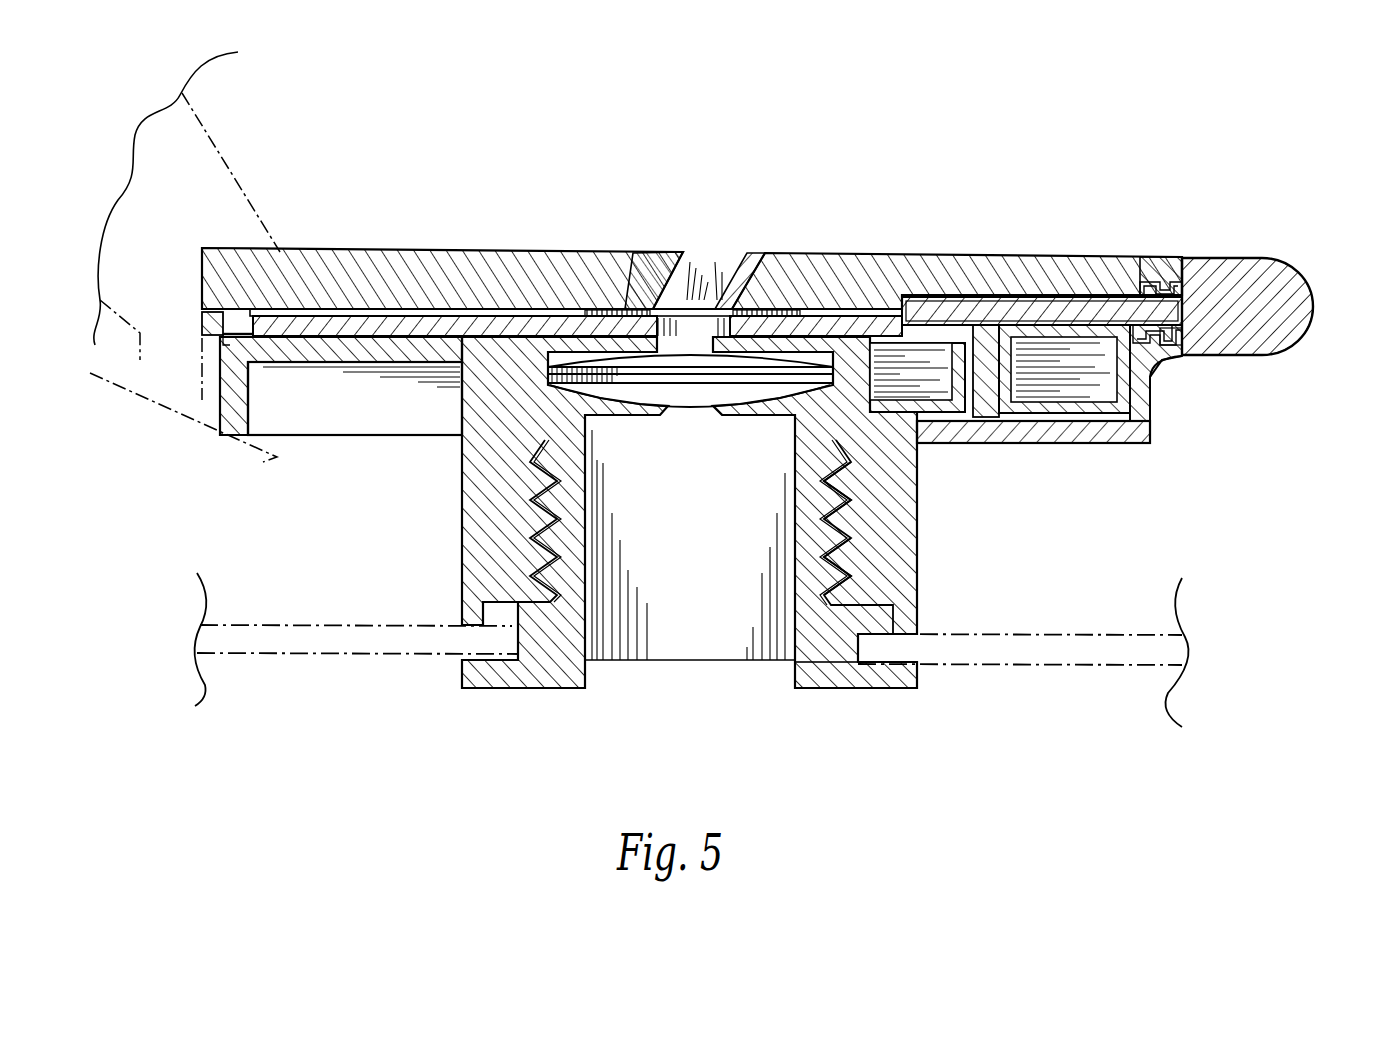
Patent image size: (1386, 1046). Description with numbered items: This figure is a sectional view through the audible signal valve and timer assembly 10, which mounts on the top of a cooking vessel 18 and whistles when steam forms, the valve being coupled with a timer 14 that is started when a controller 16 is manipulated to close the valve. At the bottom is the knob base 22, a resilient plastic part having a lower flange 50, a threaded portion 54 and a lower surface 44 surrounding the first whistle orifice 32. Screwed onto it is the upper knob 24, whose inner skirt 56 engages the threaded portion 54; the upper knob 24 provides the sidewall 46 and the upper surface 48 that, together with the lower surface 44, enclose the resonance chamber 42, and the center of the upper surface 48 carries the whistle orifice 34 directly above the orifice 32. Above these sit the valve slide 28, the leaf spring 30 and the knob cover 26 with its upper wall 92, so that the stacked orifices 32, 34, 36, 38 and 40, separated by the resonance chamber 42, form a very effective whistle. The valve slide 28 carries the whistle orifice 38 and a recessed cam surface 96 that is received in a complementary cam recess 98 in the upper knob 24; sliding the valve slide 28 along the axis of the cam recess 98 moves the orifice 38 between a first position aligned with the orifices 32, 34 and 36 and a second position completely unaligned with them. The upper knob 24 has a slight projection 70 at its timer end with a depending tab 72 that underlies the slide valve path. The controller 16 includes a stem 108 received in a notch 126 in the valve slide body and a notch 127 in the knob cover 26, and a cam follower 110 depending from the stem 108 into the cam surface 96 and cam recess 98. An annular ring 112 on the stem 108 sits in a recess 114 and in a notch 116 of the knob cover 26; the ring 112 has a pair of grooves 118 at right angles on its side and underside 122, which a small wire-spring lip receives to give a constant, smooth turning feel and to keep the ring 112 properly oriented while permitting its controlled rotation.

The audible signal valve and timer assembly 10 is at (1300, 312).
The timer 14 is at (232, 148).
The controller 16 is at (1248, 270).
The cooking vessel 18 is at (290, 626).
The knob base 22 is at (820, 680).
The upper knob 24 is at (917, 555).
The knob cover 26 is at (1030, 298).
The valve slide 28 is at (428, 325).
The leaf spring 30 is at (613, 308).
The whistle orifice 32 is at (697, 415).
The whistle orifice 34 is at (738, 300).
The orifice 36 is at (648, 285).
The whistle orifice 38 is at (690, 300).
The orifice 40 is at (720, 300).
The resonance chamber 42 is at (760, 388).
The lower surface 44 is at (645, 395).
The sidewall 46 is at (462, 437).
The upper surface 48 is at (780, 332).
The lower flange 50 is at (885, 680).
The threaded portion 54 is at (850, 590).
The inner skirt 56 is at (840, 510).
The projection 70 is at (222, 322).
The depending tab 72 is at (230, 388).
The upper wall 92 is at (340, 308).
The recessed cam surface 96 is at (1120, 395).
The cam recess 98 is at (1080, 428).
The stem 108 is at (1095, 278).
The cam follower 110 is at (1045, 410).
The annular ring 112 is at (1172, 328).
The recess 114 is at (1160, 345).
The notch 116 is at (1150, 288).
The grooves 118 is at (1195, 365).
The underside 122 is at (1165, 348).
The notch 126 is at (930, 330).
The notch 127 is at (988, 300).